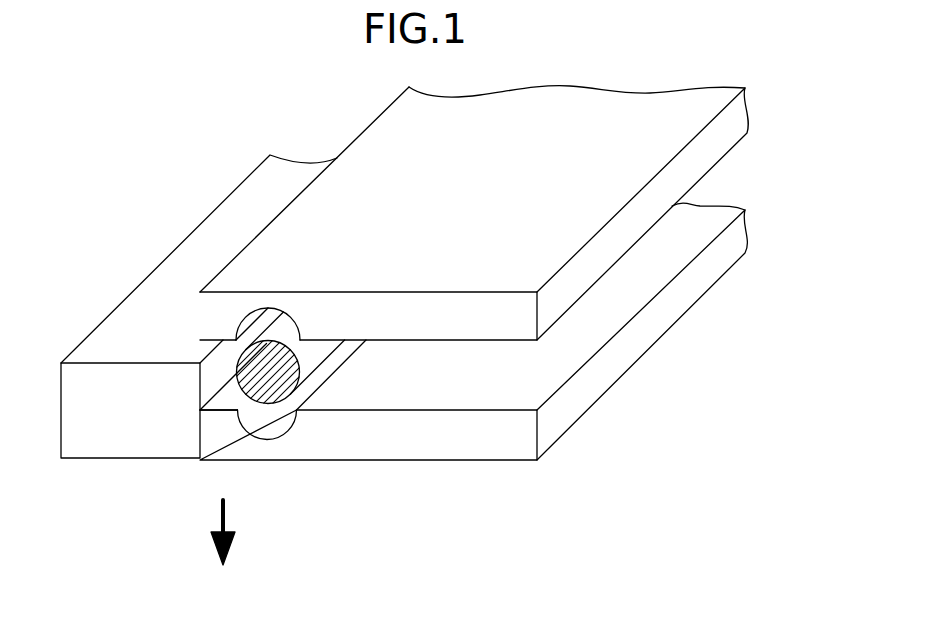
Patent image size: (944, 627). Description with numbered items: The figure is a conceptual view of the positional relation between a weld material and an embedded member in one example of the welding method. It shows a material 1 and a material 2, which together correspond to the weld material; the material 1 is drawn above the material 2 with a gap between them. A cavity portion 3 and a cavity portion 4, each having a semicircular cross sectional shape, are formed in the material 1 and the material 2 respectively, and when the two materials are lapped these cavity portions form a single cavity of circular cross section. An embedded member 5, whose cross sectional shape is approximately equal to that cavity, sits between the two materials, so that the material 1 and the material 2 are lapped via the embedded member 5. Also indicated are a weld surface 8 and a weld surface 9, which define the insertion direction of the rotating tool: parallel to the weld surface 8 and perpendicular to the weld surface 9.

The material 1 is at (703, 157).
The material 2 is at (657, 322).
The cavity portion 3 is at (277, 312).
The cavity portion 4 is at (290, 430).
The embedded member 5 is at (298, 373).
The weld surface 8 is at (217, 363).
The weld surface 9 is at (232, 398).